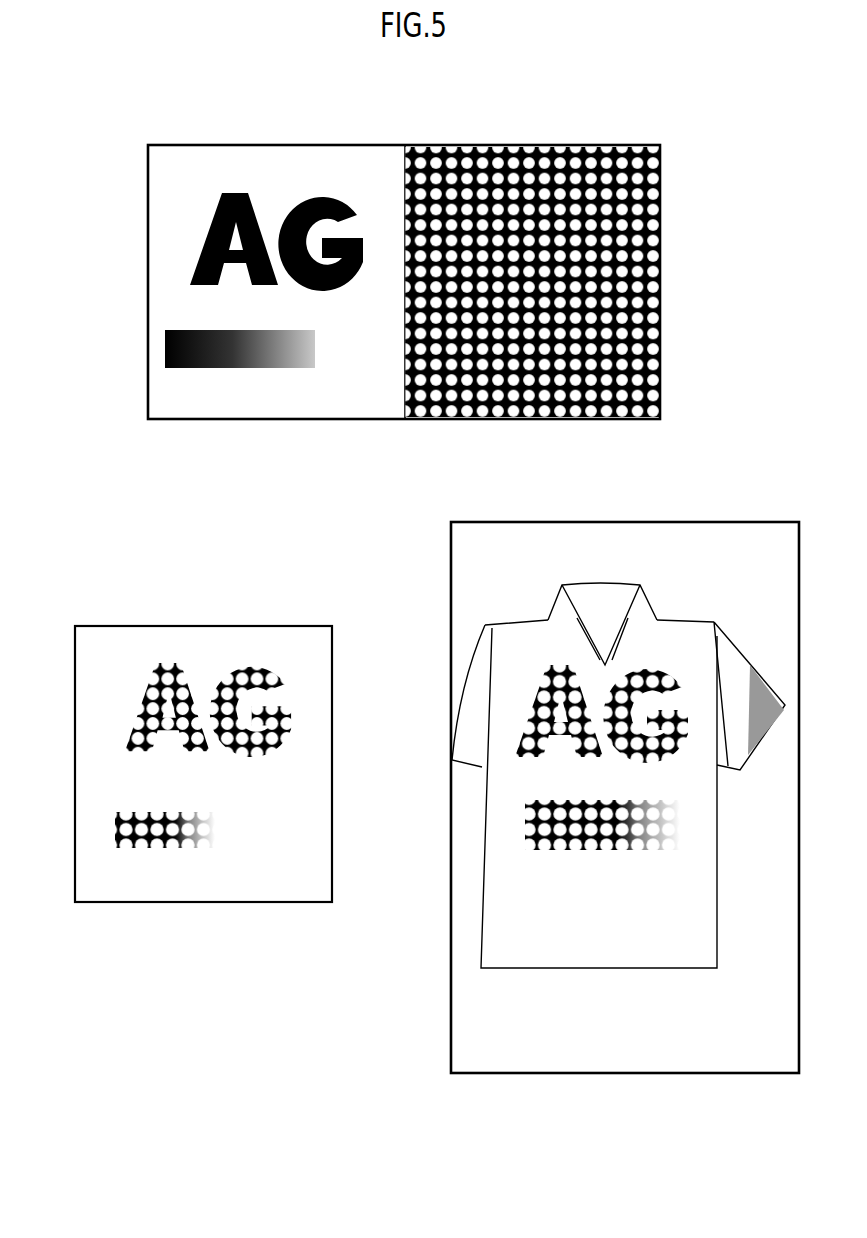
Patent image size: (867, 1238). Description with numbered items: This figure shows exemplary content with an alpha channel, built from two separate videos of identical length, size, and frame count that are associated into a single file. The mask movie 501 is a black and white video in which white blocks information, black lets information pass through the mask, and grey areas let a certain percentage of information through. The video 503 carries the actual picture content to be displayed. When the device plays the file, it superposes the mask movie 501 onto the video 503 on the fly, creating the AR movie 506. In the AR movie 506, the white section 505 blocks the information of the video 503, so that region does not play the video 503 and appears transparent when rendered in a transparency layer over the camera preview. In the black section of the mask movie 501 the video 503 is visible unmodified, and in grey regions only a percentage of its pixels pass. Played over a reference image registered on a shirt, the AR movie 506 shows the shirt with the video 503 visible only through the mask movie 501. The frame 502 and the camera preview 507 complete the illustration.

The mask movie 501 is at (354, 251).
The image frame 502 is at (148, 292).
The video 503 is at (516, 160).
The white section 505 is at (203, 767).
The AR movie 506 is at (172, 903).
The camera preview of alpha movie over a shirt 507 is at (451, 996).